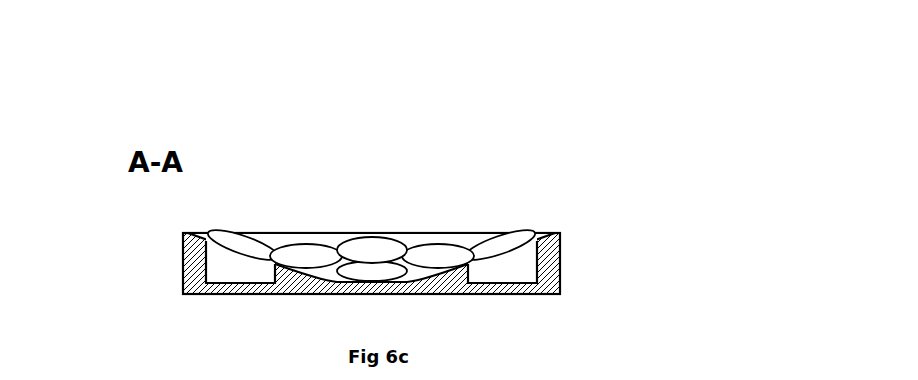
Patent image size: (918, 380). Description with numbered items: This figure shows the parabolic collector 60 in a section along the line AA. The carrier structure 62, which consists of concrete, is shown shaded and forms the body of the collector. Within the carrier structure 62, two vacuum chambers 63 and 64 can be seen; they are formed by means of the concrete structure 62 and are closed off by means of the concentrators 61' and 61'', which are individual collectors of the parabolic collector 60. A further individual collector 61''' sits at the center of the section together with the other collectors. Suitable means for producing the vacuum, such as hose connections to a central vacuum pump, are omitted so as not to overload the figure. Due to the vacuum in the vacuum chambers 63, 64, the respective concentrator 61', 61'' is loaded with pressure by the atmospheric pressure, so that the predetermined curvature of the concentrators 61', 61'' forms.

The parabolic collector 60 is at (98, 162).
The concentrator 61' is at (559, 285).
The concentrator 61'' is at (187, 285).
The individual collector 61''' is at (406, 204).
The carrier structure 62 is at (685, 248).
The vacuum chamber 63 is at (525, 277).
The vacuum chamber 64 is at (217, 273).